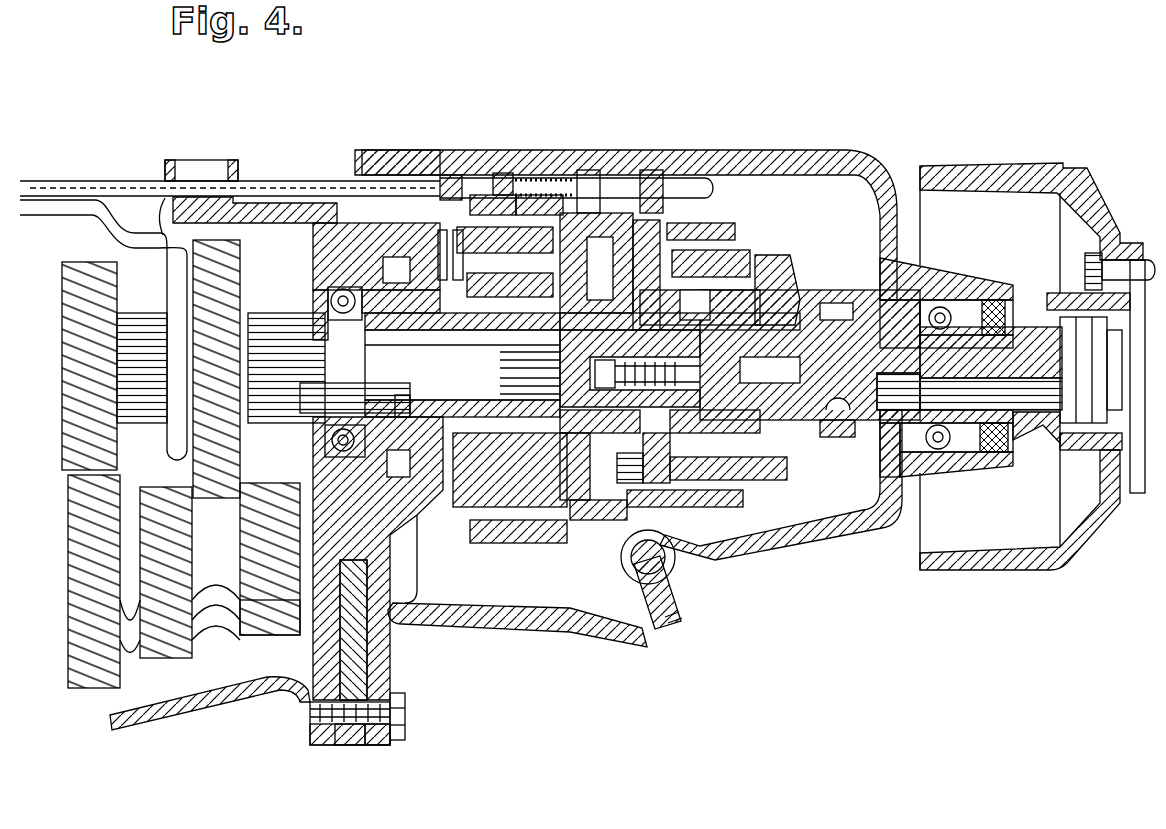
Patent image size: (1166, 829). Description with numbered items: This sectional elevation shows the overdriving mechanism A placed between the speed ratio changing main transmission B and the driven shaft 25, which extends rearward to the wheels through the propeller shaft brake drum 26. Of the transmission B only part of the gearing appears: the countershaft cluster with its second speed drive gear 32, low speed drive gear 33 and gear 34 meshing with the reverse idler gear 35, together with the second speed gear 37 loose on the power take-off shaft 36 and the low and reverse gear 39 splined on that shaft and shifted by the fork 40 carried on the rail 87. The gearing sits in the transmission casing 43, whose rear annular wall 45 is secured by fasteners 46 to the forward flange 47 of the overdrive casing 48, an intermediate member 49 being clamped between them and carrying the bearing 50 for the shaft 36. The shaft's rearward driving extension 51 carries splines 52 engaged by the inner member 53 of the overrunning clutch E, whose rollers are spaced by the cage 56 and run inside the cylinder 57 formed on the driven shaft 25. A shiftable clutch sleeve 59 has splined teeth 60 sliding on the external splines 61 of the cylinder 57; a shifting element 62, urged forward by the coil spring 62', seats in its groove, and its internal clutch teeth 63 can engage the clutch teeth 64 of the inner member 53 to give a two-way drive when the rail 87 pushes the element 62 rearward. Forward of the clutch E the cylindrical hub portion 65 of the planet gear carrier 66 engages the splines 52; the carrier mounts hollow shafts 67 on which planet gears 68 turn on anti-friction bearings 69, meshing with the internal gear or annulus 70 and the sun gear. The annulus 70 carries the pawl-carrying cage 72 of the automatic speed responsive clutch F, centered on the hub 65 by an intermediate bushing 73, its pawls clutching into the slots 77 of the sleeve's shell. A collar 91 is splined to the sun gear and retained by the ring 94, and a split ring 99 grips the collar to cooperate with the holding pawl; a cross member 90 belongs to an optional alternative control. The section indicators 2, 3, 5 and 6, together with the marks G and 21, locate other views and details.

The overdriving mechanism A is at (743, 158).
The speed ratio changing main transmission B is at (107, 200).
The overrunning clutch E is at (743, 267).
The automatic speed responsive clutch F is at (593, 240).
The clutch element G is at (720, 262).
The section line 2 is at (602, 185).
The section line 3 is at (470, 215).
The section line / bracket 5 is at (447, 583).
The section line 6 is at (720, 303).
The shaft 21 is at (436, 400).
The driven shaft 25 is at (1020, 335).
The propeller shaft brake drum 26 is at (1013, 170).
The second speed drive gear 32 is at (85, 688).
The low speed drive gear 33 is at (150, 658).
The gear 34 is at (248, 635).
The reverse idler gear 35 is at (275, 483).
The transmission power take-off shaft 36 is at (258, 313).
The second speed gear 37 is at (62, 320).
The low and reverse gear 39 is at (237, 275).
The fork 40 is at (115, 233).
The transmission casing 43 is at (135, 725).
The rear annular wall 45 is at (320, 745).
The fasteners 46 is at (408, 720).
The forward wall or flange 47 is at (378, 745).
The overdrive casing 48 is at (530, 632).
The intermediate member 49 is at (352, 745).
The bearing 50 is at (330, 300).
The rearward driving extension 51 is at (630, 368).
The splines 52 is at (647, 380).
The inner member 53 is at (667, 396).
The cage 56 is at (787, 268).
The cylinder 57 is at (750, 497).
The shiftable clutch sleeve 59 is at (713, 222).
The splined teeth 60 is at (727, 250).
The external splines 61 is at (790, 473).
The shifting element 62 is at (585, 167).
The coil spring 62' is at (544, 157).
The internal clutch teeth 63 is at (680, 314).
The clutch teeth 64 is at (672, 238).
The cylindrical hub portion 65 is at (520, 362).
The planet gear carrier 66 is at (500, 388).
The hollow shafts 67 is at (495, 297).
The planet gear 68 is at (539, 205).
The anti-friction bearings 69 is at (493, 205).
The internal gear or annulus 70 is at (515, 543).
The pawl-carrying cage 72 is at (583, 210).
The intermediate bushing 73 is at (590, 320).
The slots 77 is at (650, 215).
The rail 87 is at (165, 205).
The cross member 90 is at (695, 558).
The collar 91 is at (405, 412).
The ring 94 is at (430, 318).
The split ring 99 is at (400, 470).